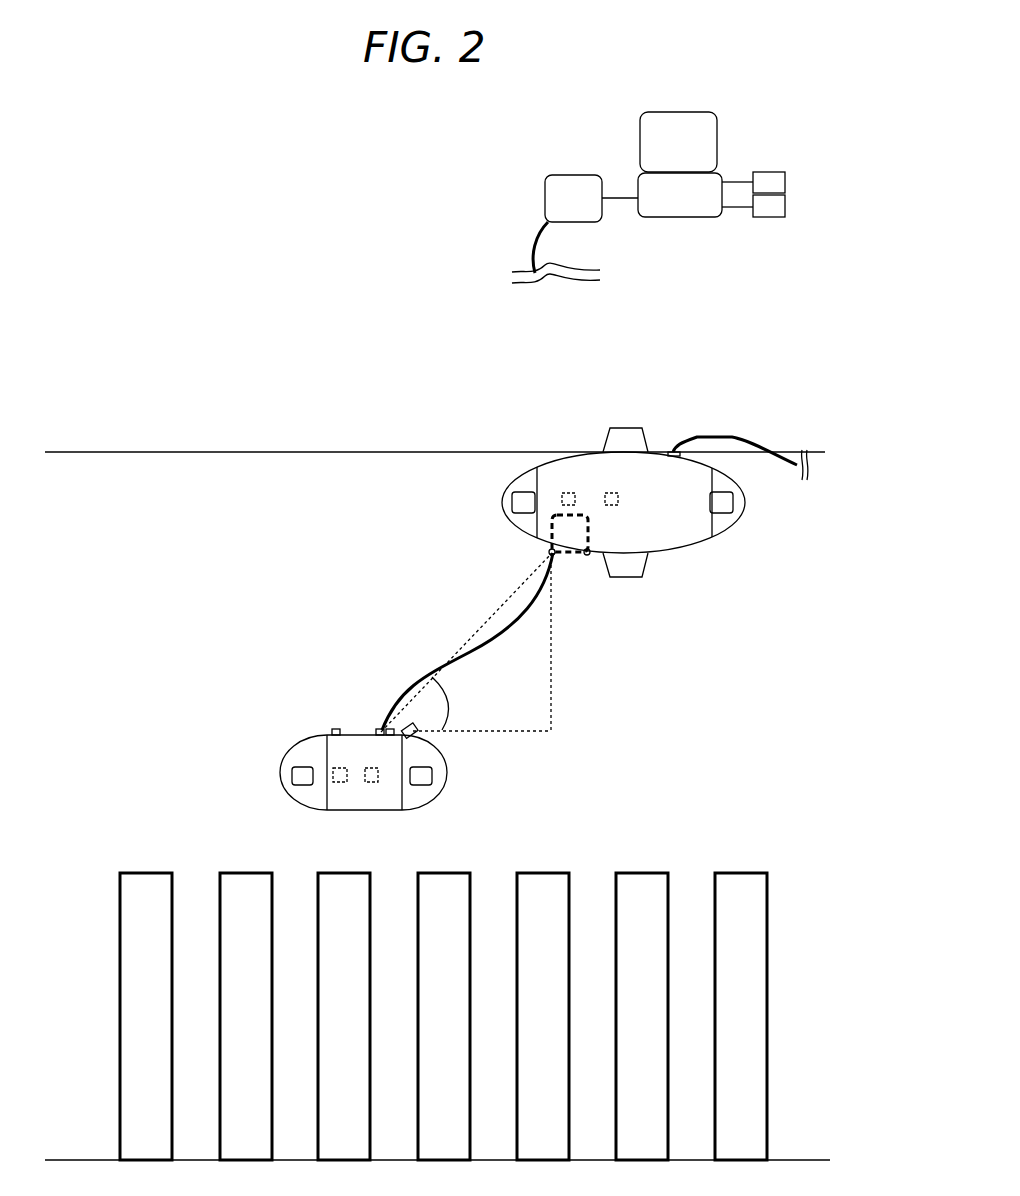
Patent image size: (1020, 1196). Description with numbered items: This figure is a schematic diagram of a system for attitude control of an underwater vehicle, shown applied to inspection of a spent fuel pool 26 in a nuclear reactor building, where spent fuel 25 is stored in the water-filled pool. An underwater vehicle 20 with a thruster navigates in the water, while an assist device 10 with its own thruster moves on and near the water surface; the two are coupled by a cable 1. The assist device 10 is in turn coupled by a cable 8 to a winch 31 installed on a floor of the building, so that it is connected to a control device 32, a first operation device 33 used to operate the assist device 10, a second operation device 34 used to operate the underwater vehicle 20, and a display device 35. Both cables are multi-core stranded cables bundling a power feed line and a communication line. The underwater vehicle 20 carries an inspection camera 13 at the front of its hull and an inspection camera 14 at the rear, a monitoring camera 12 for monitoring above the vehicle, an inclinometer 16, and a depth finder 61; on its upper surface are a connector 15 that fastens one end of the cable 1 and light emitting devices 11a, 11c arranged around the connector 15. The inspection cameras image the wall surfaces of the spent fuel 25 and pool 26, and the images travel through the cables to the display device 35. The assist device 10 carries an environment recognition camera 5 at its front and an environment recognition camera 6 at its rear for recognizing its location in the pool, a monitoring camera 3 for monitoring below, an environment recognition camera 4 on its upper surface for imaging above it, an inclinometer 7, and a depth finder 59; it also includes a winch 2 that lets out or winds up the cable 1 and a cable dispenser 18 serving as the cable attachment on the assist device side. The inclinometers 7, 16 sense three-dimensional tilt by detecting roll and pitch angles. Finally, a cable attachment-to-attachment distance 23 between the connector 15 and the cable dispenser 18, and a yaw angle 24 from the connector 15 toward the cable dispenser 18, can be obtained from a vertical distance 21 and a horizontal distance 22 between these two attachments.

The cable 1 is at (425, 673).
The winch 2 is at (568, 538).
The monitoring camera 3 is at (628, 578).
The environment recognition camera 4 is at (628, 428).
The environment recognition camera 5 is at (512, 500).
The environment recognition camera 6 is at (734, 500).
The inclinometer 7 is at (567, 492).
The cable 8 is at (715, 436).
The assist device 10 is at (682, 532).
The light emitting device 11a is at (335, 728).
The light emitting device 11c is at (388, 728).
The monitoring camera 12 is at (417, 737).
The inspection camera 13 is at (292, 776).
The inspection camera 14 is at (432, 775).
The connector 15 is at (375, 729).
The inclinometer 16 is at (340, 784).
The cable dispenser 18 is at (553, 556).
The underwater vehicle 20 is at (343, 753).
The vertical distance 21 is at (551, 675).
The horizontal distance 22 is at (533, 733).
The cable attachment-to-attachment distance 23 is at (485, 622).
The yaw angle 24 is at (448, 703).
The spent fuel 25 is at (737, 872).
The spent fuel pool 26 is at (135, 452).
The winch 31 is at (545, 198).
The control device 32 is at (722, 175).
The first operation device 33 is at (787, 180).
The second operation device 34 is at (787, 207).
The display device 35 is at (640, 140).
The depth finder 59 is at (613, 494).
The depth finder 61 is at (371, 784).